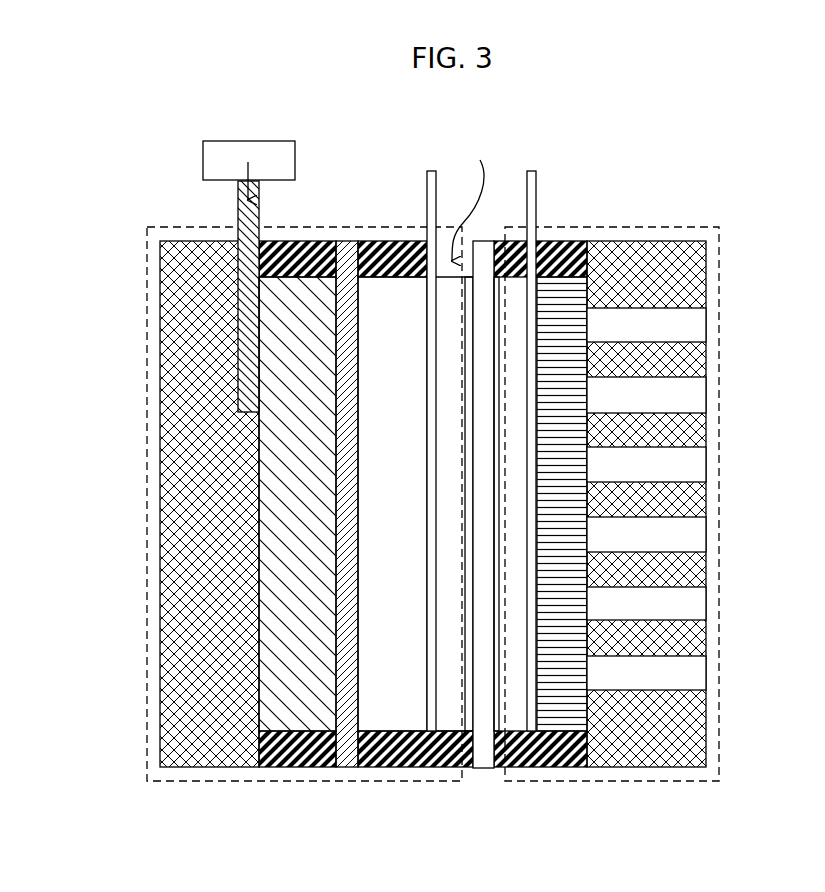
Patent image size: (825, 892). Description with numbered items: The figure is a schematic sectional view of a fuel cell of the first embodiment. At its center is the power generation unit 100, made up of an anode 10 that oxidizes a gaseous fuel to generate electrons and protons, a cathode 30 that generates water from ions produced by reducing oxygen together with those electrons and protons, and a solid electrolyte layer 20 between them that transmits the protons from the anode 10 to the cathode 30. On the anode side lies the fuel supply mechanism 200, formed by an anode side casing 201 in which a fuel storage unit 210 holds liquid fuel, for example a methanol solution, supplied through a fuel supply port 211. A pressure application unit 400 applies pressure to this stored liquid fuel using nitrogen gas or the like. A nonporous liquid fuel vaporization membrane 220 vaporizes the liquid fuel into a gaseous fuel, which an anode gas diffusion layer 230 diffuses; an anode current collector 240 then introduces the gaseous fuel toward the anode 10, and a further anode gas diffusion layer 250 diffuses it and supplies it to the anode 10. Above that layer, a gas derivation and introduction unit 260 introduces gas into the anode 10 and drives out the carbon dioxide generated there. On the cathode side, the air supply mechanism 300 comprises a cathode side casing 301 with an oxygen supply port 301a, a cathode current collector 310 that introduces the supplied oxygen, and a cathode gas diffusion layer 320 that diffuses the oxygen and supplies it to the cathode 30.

The anode 10 is at (468, 690).
The solid electrolyte layer 20 is at (480, 752).
The cathode 30 is at (498, 680).
The power generation unit 100 is at (526, 565).
The fuel supply mechanism 200 is at (146, 705).
The anode side casing 201 is at (187, 375).
The fuel storage unit 210 is at (295, 490).
The fuel supply port 211 is at (237, 220).
The liquid fuel vaporization membrane 220 is at (343, 590).
The anode gas diffusion layer 230 is at (387, 702).
The anode current collector 240 is at (427, 195).
The anode gas diffusion layer 250 is at (453, 673).
The gas derivation and introduction unit 260 is at (477, 198).
The air supply mechanism 300 is at (719, 702).
The cathode side casing 301 is at (694, 504).
The oxygen supply port 301a is at (692, 325).
The cathode current collector 310 is at (537, 194).
The cathode gas diffusion layer 320 is at (512, 555).
The pressure application unit 400 is at (230, 140).